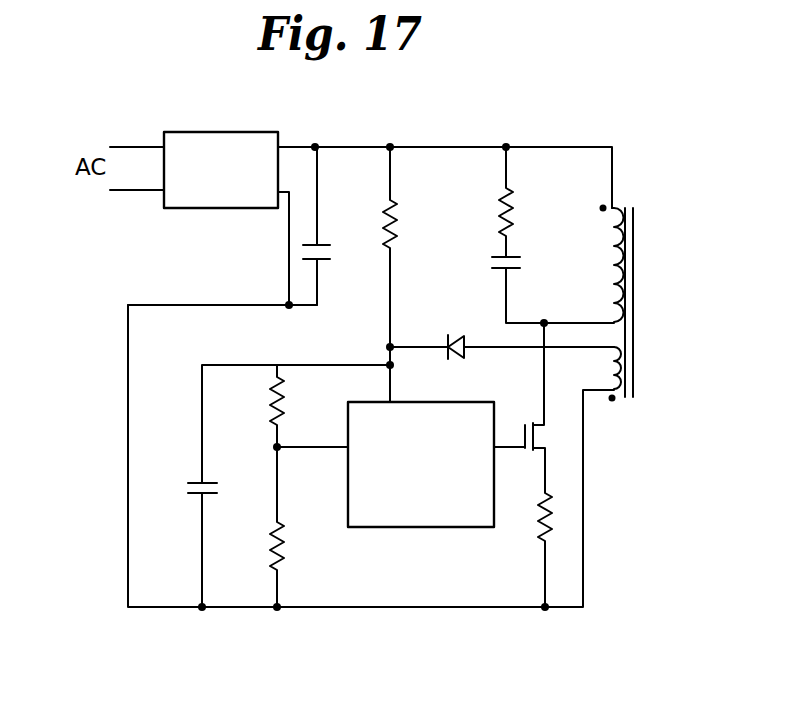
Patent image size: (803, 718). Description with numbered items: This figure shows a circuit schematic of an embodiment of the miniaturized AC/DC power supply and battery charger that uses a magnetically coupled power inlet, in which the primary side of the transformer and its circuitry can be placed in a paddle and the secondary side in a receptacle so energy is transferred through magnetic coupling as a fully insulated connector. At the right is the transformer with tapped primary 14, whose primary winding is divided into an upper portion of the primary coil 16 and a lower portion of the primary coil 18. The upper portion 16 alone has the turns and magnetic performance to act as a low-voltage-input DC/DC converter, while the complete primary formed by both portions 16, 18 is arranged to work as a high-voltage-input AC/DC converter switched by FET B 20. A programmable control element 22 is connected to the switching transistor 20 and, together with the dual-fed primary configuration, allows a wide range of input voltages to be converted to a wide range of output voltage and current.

The transformer with tapped primary T1 14 is at (658, 264).
The upper portion of the primary coil 16 is at (636, 232).
The lower portion of the primary coil 18 is at (613, 369).
The FET B 20 is at (220, 138).
The control element 22 is at (452, 513).